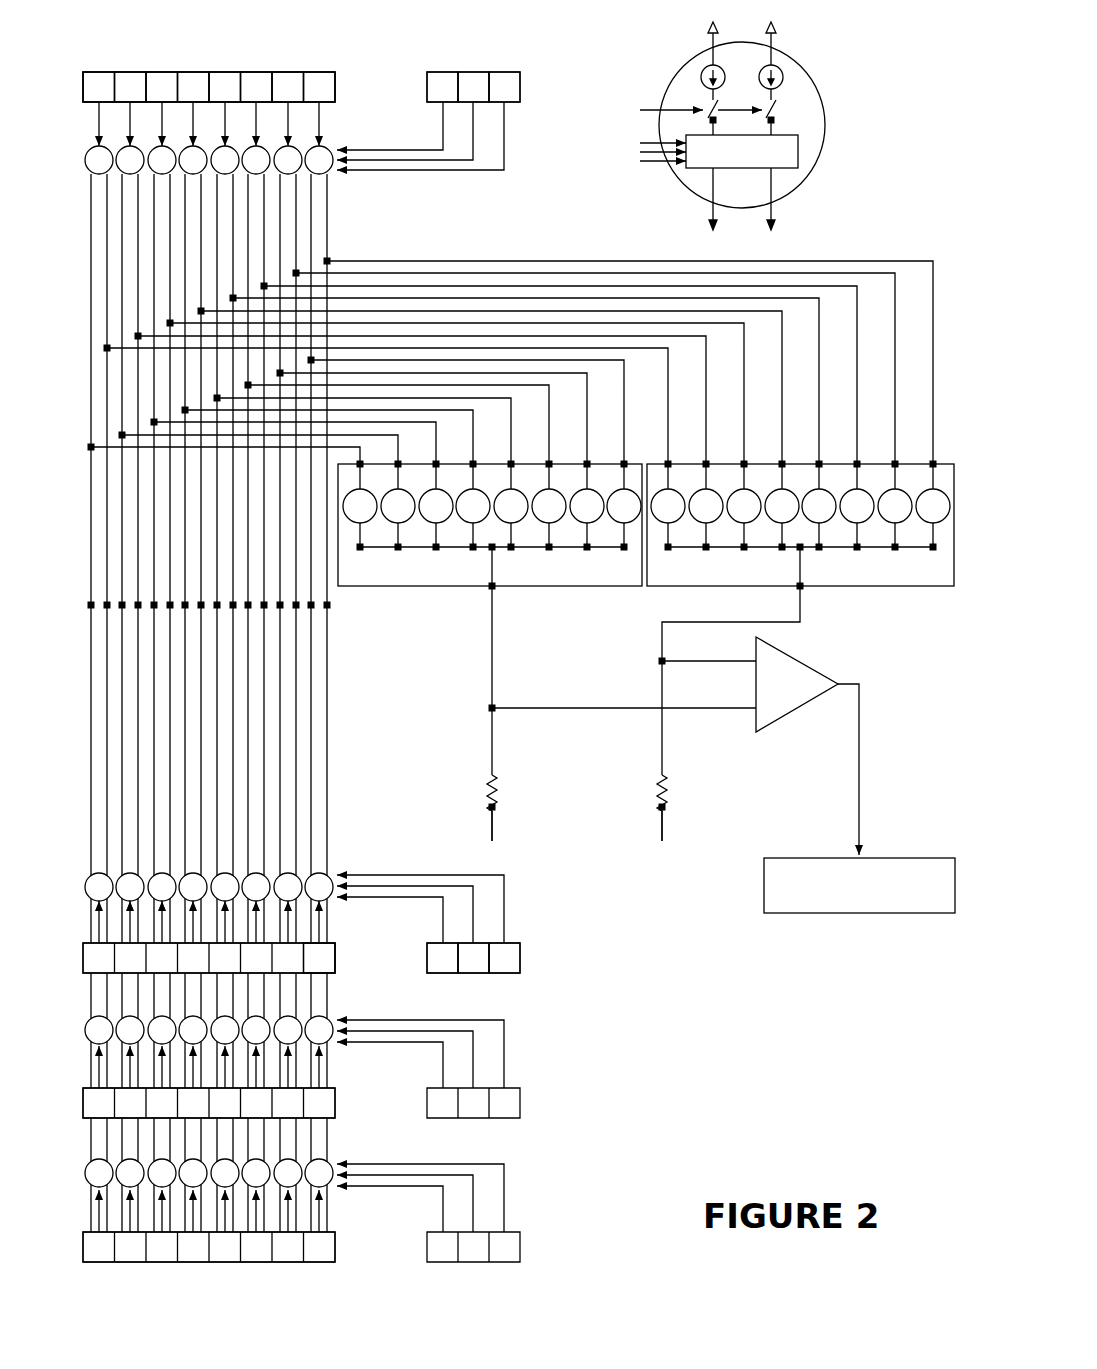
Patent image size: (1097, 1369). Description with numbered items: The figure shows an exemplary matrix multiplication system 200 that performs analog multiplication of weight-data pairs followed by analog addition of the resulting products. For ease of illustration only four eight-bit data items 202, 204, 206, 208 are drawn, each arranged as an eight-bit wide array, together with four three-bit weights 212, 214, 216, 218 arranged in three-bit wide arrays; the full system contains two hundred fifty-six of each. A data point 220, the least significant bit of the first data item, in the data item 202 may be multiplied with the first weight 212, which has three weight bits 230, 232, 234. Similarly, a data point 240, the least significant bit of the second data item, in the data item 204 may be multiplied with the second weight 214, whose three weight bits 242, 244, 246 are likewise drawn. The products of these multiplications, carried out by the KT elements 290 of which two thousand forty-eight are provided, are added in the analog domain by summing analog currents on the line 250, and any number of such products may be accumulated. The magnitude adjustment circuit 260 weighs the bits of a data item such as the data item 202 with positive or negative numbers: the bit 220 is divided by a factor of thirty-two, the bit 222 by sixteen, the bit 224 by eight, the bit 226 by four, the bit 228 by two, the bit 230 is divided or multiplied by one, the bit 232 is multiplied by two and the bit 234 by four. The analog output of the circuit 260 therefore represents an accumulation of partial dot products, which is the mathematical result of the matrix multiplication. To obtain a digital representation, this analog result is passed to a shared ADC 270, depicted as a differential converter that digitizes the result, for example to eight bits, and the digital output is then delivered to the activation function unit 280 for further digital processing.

The matrix multiplication system 200 is at (716, 1001).
The data item 202 is at (340, 73).
The data item 204 is at (83, 940).
The data item 206 is at (83, 1085).
The data item 208 is at (83, 1229).
The weight 212 is at (523, 103).
The weight 214 is at (528, 975).
The weight 216 is at (528, 1119).
The weight 218 is at (528, 1230).
The data point 220 is at (318, 71).
The bit 222 is at (287, 71).
The bit 224 is at (255, 71).
The bit 226 is at (223, 71).
The bit 228 is at (193, 71).
The weight bit 230 is at (161, 71).
The weight bit 232 is at (131, 71).
The weight bit 234 is at (102, 71).
The data point 240 is at (337, 946).
The weight bit 242 is at (522, 960).
The weight bit 244 is at (483, 943).
The weight bit 246 is at (427, 973).
The line 250 is at (333, 763).
The magnitude adjustment circuit 260 is at (872, 588).
The ADC 270 is at (790, 714).
The activation function unit 280 is at (764, 885).
The KT element 290 is at (818, 86).